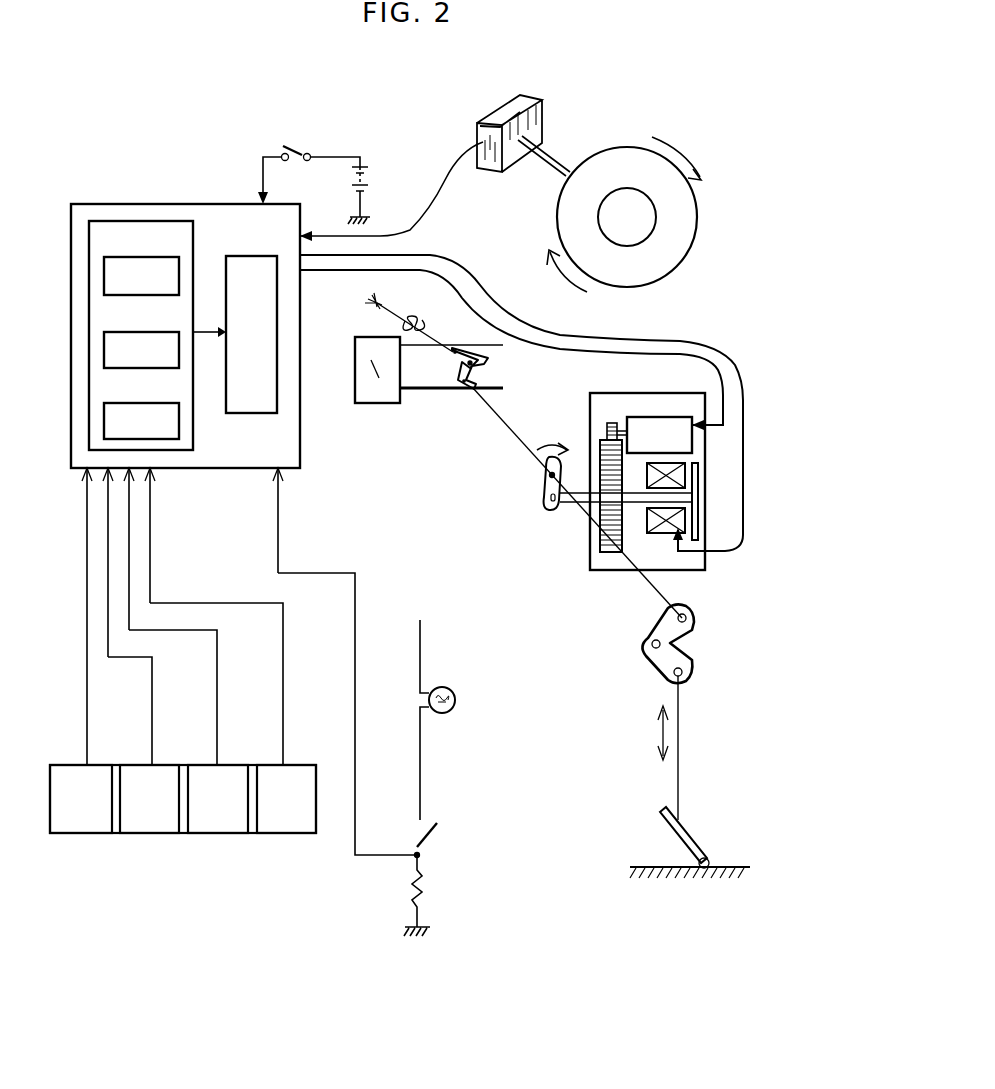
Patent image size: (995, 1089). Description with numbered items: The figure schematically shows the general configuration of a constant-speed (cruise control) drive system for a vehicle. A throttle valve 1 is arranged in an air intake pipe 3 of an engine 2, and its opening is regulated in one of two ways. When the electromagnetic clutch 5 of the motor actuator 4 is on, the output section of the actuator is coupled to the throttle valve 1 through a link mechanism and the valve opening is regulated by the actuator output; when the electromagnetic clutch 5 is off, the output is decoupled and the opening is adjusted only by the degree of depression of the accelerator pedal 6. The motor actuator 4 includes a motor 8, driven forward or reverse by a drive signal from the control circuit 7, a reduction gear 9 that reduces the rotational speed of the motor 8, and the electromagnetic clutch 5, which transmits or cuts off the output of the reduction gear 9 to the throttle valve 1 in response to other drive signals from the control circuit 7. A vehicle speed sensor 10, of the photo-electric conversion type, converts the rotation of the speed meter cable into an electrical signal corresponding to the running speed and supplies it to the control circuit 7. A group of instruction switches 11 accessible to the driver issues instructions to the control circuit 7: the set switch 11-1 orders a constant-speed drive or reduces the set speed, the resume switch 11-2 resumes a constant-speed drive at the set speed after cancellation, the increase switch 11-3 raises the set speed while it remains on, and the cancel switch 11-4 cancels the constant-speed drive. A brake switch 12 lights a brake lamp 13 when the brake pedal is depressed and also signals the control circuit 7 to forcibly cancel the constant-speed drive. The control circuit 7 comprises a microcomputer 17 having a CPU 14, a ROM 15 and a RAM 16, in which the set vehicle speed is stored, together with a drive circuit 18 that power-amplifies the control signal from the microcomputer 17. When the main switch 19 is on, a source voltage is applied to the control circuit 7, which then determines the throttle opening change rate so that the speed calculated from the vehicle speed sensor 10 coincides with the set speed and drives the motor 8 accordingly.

The throttle valve 1 is at (480, 347).
The engine 2 is at (372, 403).
The air intake pipe 3 is at (468, 347).
The motor actuator 4 is at (603, 393).
The electromagnetic clutch 5 is at (702, 492).
The accelerator pedal 6 is at (686, 835).
The control circuit 7 is at (193, 204).
The motor 8 is at (657, 417).
The reduction gear 9 is at (600, 427).
The vehicle speed sensor 10 is at (477, 118).
The instruction switches 11 is at (183, 866).
The set switch 11-1 is at (83, 833).
The resume switch 11-2 is at (153, 833).
The increase switch 11-3 is at (220, 833).
The cancel switch 11-4 is at (286, 830).
The brake switch 12 is at (440, 838).
The brake lamp 13 is at (456, 697).
The CPU 14 is at (140, 257).
The ROM 15 is at (140, 332).
The RAM 16 is at (140, 403).
The microcomputer 17 is at (193, 230).
The drive circuit 18 is at (247, 413).
The main switch 19 is at (298, 150).